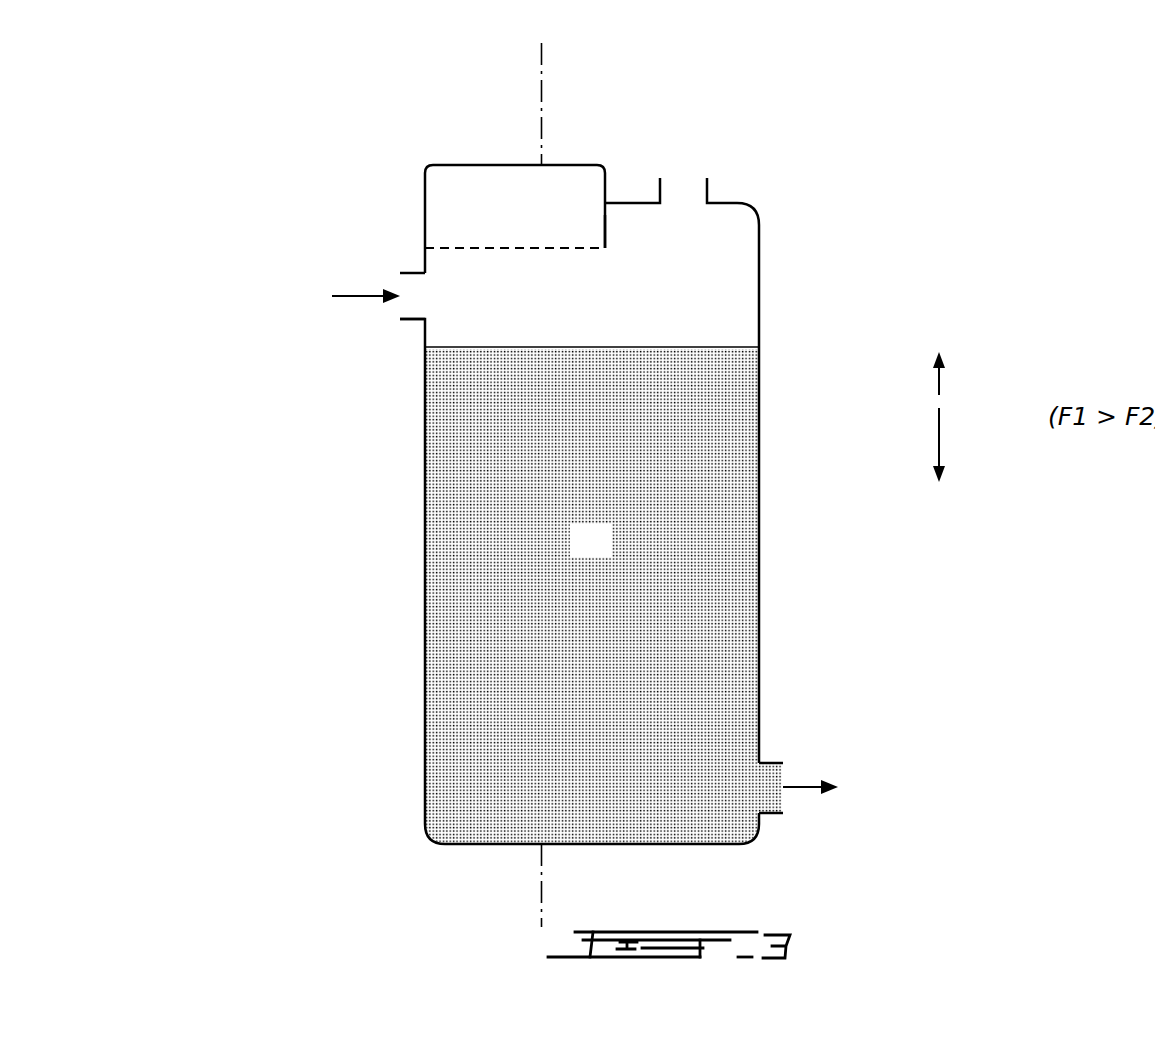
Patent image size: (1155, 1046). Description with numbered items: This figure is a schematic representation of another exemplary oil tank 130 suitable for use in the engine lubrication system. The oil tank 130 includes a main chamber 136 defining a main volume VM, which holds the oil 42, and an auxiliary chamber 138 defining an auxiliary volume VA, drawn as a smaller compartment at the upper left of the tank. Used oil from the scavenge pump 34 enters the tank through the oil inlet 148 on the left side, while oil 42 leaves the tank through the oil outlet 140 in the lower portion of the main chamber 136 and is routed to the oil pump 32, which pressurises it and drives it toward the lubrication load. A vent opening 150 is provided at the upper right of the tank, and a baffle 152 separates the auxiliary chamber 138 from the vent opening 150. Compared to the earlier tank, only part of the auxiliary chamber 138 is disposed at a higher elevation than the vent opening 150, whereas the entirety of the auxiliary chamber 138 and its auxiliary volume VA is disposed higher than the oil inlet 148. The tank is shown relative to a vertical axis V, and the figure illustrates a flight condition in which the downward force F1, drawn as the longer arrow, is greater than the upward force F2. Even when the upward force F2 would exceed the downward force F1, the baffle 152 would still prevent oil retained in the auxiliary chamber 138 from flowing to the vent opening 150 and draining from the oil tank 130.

The oil tank 130 is at (760, 540).
The oil 42 is at (602, 553).
The main chamber 136 is at (435, 637).
The auxiliary chamber 138 is at (442, 187).
The oil inlet 148 is at (410, 289).
The scavenge oil pump 34 is at (245, 358).
The vent opening 150 is at (683, 202).
The baffle 152 is at (605, 230).
The oil outlet 140 is at (768, 787).
The supply pressure oil pump 32 is at (893, 833).
The vertical axis V is at (542, 69).
The downward force F1 is at (939, 438).
The upward force F2 is at (939, 382).